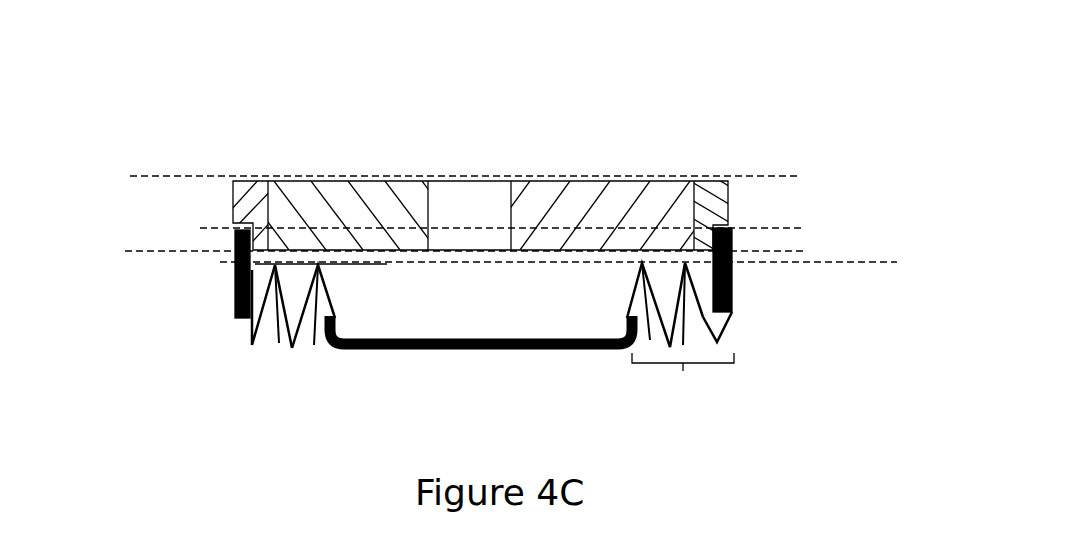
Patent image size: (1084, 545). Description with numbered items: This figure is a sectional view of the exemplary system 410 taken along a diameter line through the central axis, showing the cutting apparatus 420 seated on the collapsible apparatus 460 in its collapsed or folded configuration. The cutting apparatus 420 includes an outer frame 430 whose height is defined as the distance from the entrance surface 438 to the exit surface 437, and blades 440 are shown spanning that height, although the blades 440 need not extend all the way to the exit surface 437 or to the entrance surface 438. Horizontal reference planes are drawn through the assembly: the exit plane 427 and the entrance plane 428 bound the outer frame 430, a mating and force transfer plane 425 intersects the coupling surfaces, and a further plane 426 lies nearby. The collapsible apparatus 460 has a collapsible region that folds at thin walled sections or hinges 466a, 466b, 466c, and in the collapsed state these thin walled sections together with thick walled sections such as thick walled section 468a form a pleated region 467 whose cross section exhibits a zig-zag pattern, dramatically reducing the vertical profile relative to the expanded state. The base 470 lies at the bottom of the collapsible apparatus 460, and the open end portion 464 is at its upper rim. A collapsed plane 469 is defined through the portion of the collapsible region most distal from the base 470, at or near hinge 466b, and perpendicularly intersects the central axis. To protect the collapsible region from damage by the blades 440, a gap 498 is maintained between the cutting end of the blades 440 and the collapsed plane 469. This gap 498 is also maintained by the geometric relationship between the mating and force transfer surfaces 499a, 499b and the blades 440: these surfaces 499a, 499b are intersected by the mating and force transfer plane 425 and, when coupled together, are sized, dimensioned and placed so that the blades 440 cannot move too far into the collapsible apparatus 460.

The system 410 is at (278, 68).
The cutting apparatus 420 is at (566, 174).
The mating and force transfer plane 425 is at (792, 224).
The plane 426 is at (138, 248).
The exit plane 427 is at (177, 172).
The entrance plane 428 is at (165, 248).
The outer frame 430 is at (269, 181).
The exit surface 437 is at (708, 177).
The entrance surface 438 is at (236, 292).
The blades 440 is at (358, 249).
The collapsible apparatus 460 is at (212, 282).
The open end portion 464 is at (732, 278).
The hinge 466a is at (252, 343).
The hinge 466b is at (687, 257).
The hinge 466c is at (292, 350).
The pleated region 467 is at (683, 379).
The thick walled section 468a is at (730, 328).
The collapsed plane 469 is at (825, 258).
The base 470 is at (537, 352).
The gap 498 is at (358, 267).
The mating and force transfer surface 499a is at (710, 230).
The mating and force transfer surface 499b is at (723, 224).